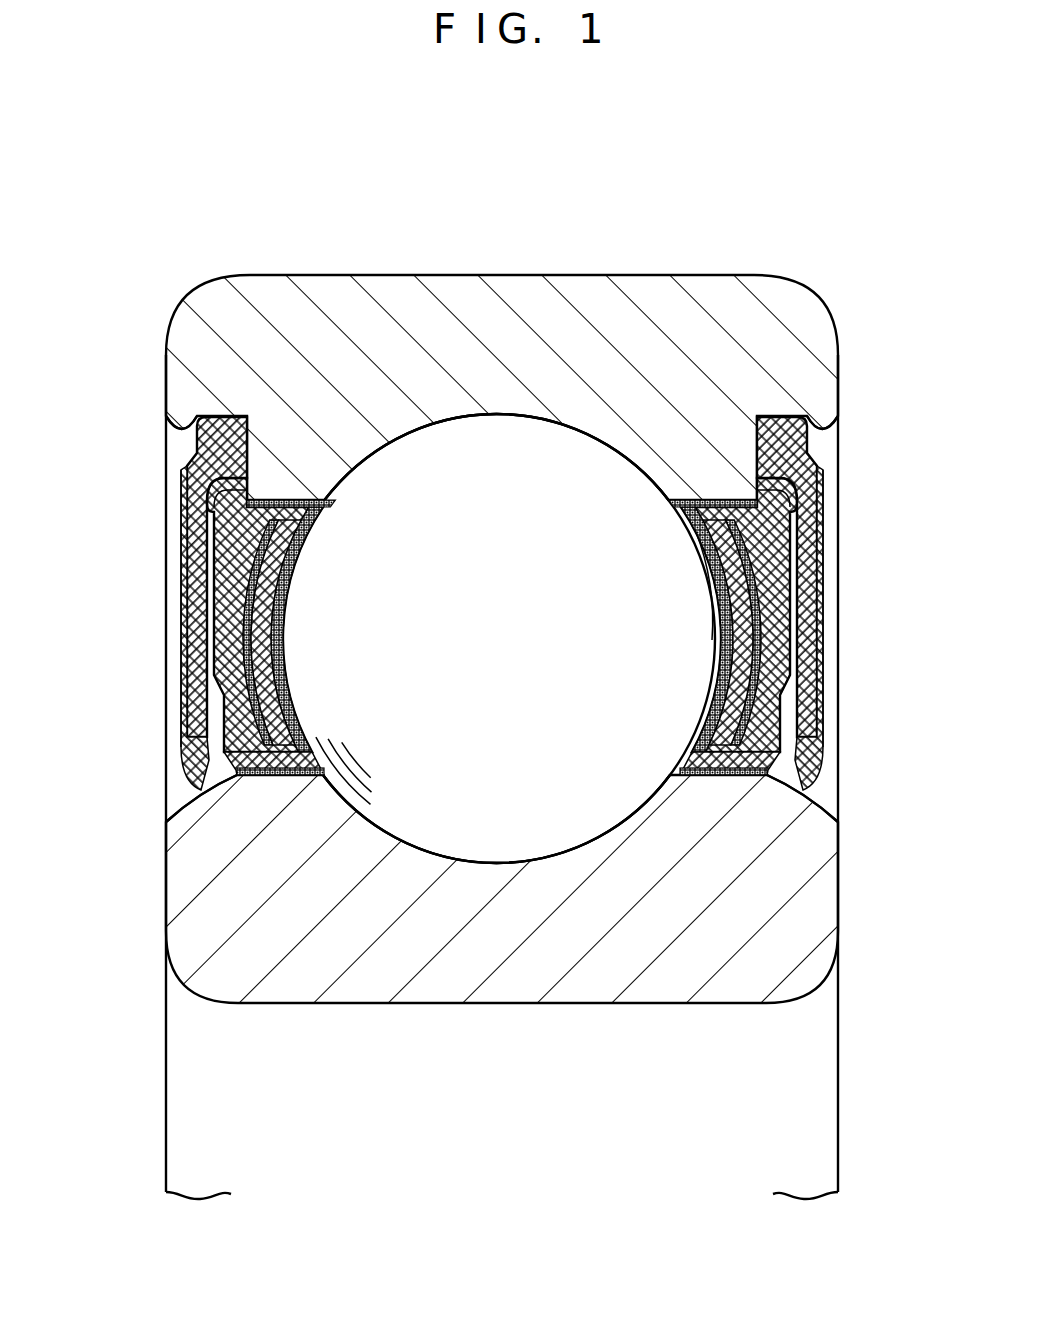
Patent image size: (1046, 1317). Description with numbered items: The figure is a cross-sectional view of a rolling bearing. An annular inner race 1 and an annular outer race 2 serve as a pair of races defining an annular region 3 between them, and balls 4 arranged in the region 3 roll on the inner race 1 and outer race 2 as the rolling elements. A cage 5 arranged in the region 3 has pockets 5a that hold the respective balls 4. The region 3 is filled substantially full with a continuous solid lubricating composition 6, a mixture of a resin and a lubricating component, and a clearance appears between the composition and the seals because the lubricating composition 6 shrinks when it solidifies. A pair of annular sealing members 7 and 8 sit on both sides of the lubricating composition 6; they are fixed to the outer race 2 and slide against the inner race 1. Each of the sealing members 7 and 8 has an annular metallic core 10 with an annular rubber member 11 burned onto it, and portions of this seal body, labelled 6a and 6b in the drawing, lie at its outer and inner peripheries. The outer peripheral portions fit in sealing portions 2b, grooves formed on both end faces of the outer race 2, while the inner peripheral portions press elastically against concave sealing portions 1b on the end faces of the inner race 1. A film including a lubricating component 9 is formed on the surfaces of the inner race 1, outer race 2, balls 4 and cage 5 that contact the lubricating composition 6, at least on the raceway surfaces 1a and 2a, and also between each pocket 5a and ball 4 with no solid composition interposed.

The inner race 1 is at (640, 1004).
The raceway surface 1a is at (479, 862).
The concave sealing portion 1b is at (172, 797).
The outer race 2 is at (653, 276).
The raceway surface 2a is at (453, 420).
The sealing portion 2b is at (193, 440).
The annular region 3 is at (793, 690).
The ball 4 is at (553, 845).
The cage 5 is at (718, 707).
The pocket 5a is at (716, 648).
The solid lubricating composition 6 is at (793, 543).
The outer seal portion 6a is at (200, 505).
The inner seal portion 6b is at (215, 773).
The sealing member 7 is at (828, 583).
The sealing member 8 is at (172, 696).
The film including a lubricating component 9 is at (700, 580).
The metallic core 10 is at (188, 660).
The rubber member 11 is at (198, 458).